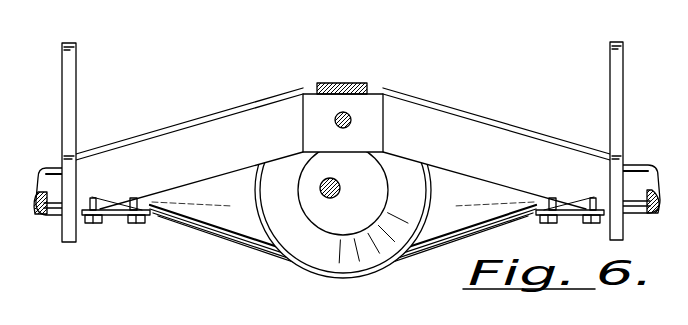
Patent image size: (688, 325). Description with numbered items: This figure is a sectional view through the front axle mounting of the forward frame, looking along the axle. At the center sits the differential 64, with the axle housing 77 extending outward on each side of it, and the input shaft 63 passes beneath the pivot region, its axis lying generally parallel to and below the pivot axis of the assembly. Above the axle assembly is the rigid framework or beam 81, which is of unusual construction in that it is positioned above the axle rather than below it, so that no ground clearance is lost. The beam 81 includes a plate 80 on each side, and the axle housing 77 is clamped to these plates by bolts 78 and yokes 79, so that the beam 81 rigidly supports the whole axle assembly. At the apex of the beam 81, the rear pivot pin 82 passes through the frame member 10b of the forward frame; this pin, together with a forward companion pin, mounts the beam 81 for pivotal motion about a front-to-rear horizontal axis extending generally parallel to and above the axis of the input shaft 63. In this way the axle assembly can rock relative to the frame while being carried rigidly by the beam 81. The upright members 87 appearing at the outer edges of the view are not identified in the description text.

The frame member 10b is at (348, 82).
The input shaft 63 is at (339, 195).
The differential 64 is at (382, 258).
The axle housing 77 is at (53, 168).
The bolts 78 is at (144, 221).
The yokes 79 is at (108, 222).
The plate 80 is at (170, 128).
The beam 81 is at (218, 133).
The pin 82 is at (352, 115).
The upright post 87 is at (70, 73).